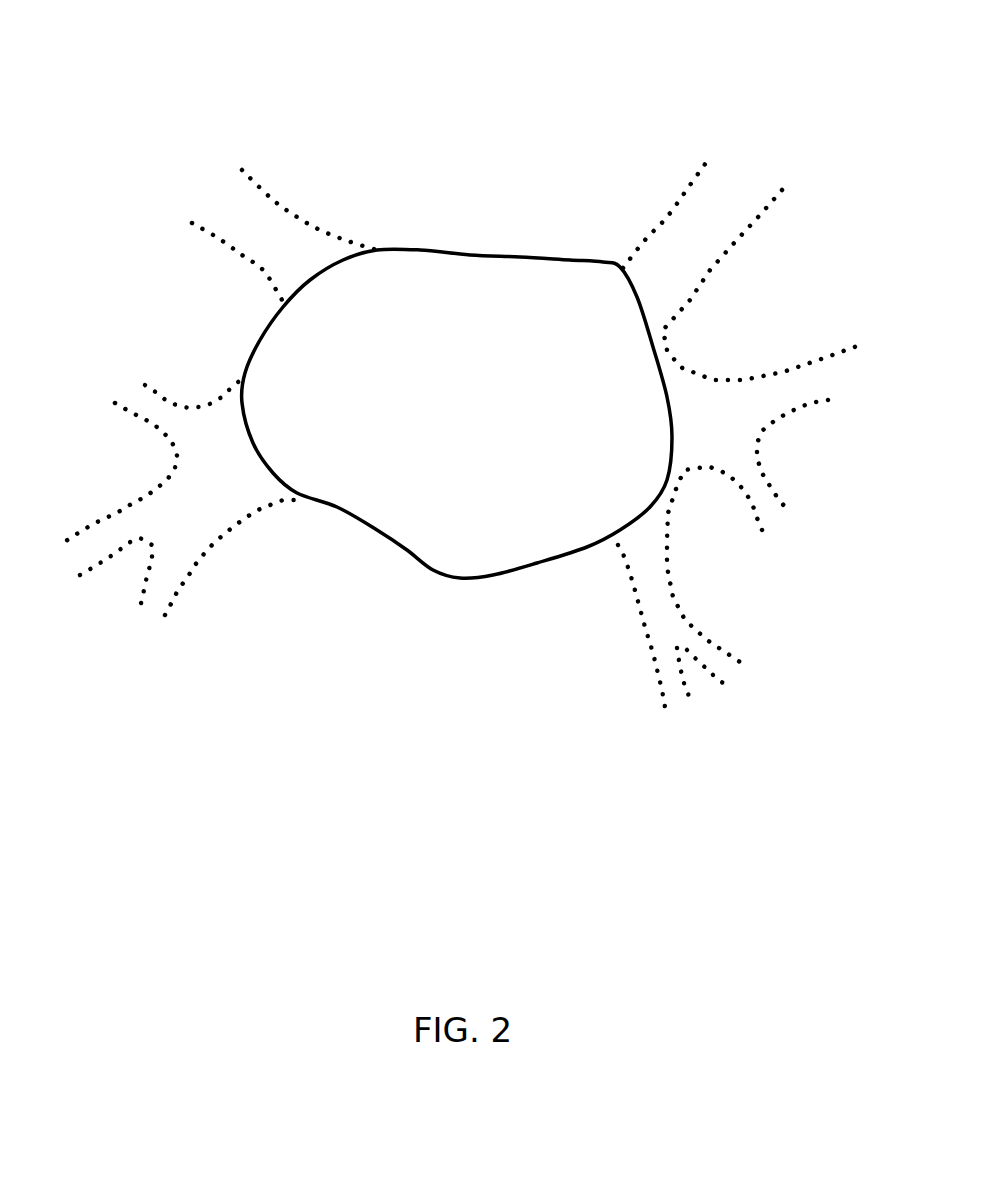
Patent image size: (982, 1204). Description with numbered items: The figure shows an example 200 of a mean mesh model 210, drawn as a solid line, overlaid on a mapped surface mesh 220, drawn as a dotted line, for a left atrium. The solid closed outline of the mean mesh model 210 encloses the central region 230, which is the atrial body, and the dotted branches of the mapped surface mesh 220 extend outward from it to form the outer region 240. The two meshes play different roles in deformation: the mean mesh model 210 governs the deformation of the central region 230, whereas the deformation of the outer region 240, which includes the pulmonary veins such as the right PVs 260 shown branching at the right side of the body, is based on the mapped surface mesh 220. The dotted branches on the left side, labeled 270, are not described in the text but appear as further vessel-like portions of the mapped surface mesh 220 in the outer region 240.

The example 200 is at (166, 891).
The mean mesh model 210 is at (345, 258).
The mapped surface mesh 220 is at (275, 200).
The central region 230 is at (483, 482).
The outer region 240 is at (615, 680).
The right PVs 260 is at (668, 543).
The left vessels 270 is at (207, 407).